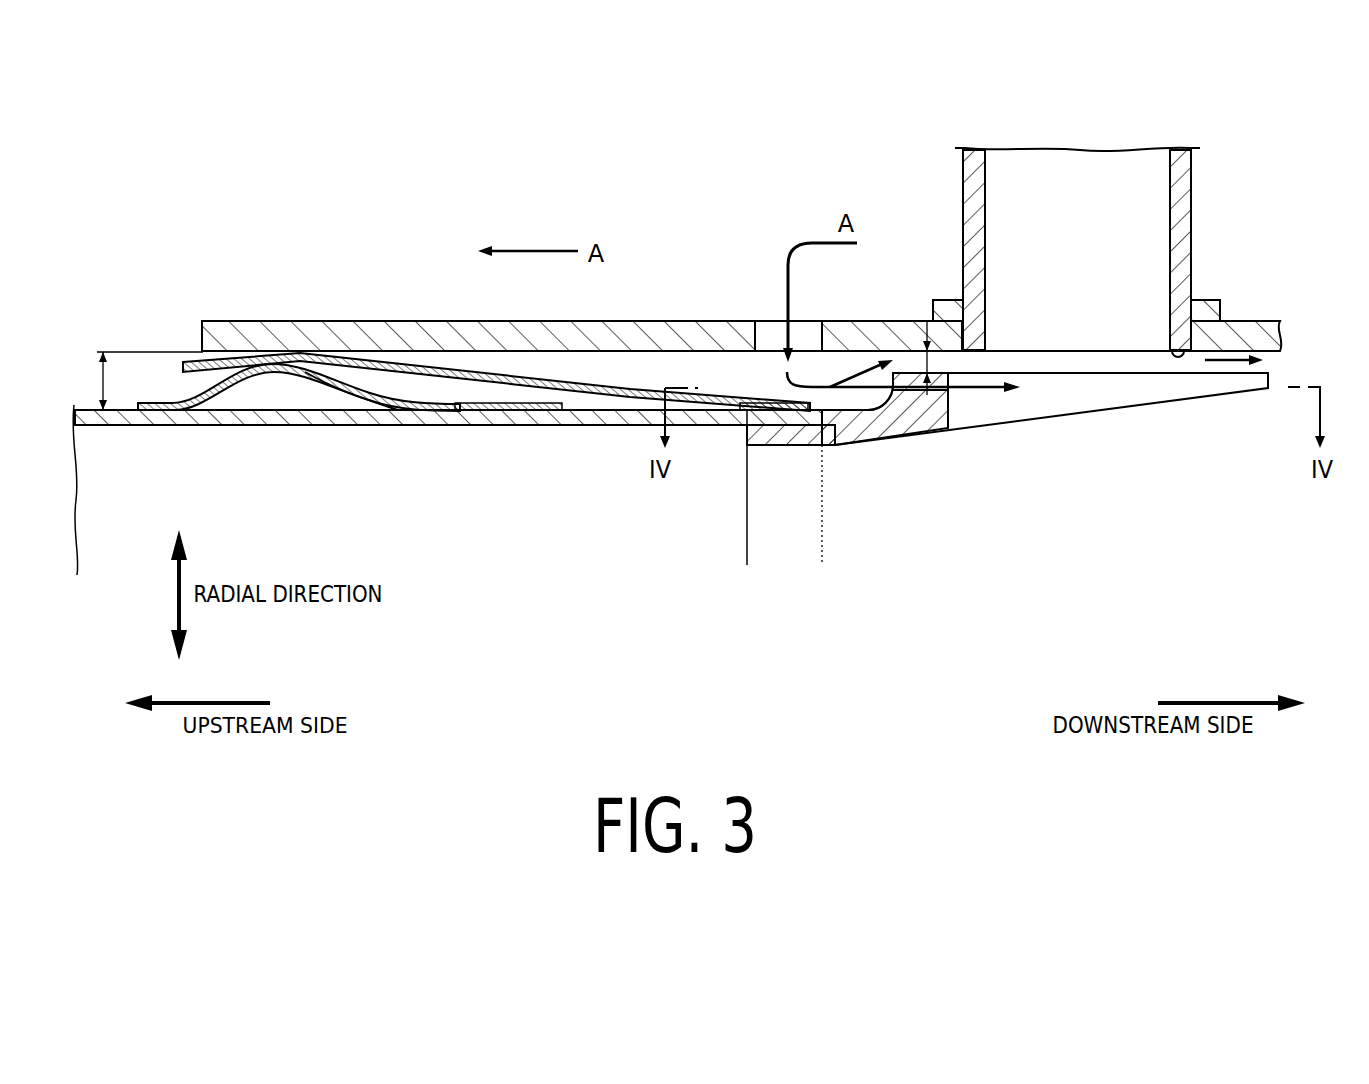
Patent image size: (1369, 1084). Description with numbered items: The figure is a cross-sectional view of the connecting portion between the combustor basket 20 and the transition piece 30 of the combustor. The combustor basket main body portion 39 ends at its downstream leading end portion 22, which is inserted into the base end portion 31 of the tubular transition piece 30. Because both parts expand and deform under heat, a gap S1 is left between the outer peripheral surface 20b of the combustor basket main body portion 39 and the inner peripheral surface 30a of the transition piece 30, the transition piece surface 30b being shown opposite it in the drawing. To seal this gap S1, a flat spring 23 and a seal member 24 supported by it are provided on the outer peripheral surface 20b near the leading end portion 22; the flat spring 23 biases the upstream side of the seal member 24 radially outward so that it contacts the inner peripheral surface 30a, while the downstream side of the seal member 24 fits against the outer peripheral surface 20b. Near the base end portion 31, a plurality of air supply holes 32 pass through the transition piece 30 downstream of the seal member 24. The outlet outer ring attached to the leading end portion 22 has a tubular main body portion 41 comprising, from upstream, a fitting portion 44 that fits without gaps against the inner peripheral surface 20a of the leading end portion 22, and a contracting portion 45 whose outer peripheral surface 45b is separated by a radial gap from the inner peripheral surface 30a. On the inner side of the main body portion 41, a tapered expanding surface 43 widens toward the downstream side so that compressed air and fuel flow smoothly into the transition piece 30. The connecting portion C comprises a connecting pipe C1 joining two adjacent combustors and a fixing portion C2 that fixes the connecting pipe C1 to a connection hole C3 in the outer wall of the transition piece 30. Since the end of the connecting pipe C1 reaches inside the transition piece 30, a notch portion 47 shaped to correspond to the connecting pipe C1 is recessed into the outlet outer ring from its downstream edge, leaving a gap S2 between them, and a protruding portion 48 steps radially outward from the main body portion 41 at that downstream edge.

The combustor basket 20 is at (506, 440).
The inner peripheral surface 20a is at (703, 426).
The outer peripheral surface 20b is at (581, 415).
The leading end portion 22 is at (757, 417).
The flat spring 23 is at (353, 393).
The seal member 24 is at (300, 352).
The transition piece 30 is at (496, 303).
The inner peripheral surface 30a is at (446, 355).
The upper surface of block 31 30b is at (642, 320).
The base end portion 31 is at (222, 320).
The air supply holes 32 is at (766, 345).
The combustor basket main body portion 39 is at (436, 420).
The main body portion 41 is at (932, 428).
The expanding surface 43 is at (903, 430).
The fitting portion 44 is at (780, 447).
The contracting portion 45 is at (1068, 420).
The outer peripheral surface 45b is at (1112, 374).
The notch portion 47 is at (952, 415).
The protruding portion 48 is at (890, 373).
The connecting portion C is at (1128, 249).
The connecting pipe C1 is at (1183, 175).
The fixing portion C2 is at (1210, 298).
The connection hole C3 is at (1180, 352).
The gap S1 is at (136, 381).
The gap S2 is at (907, 348).